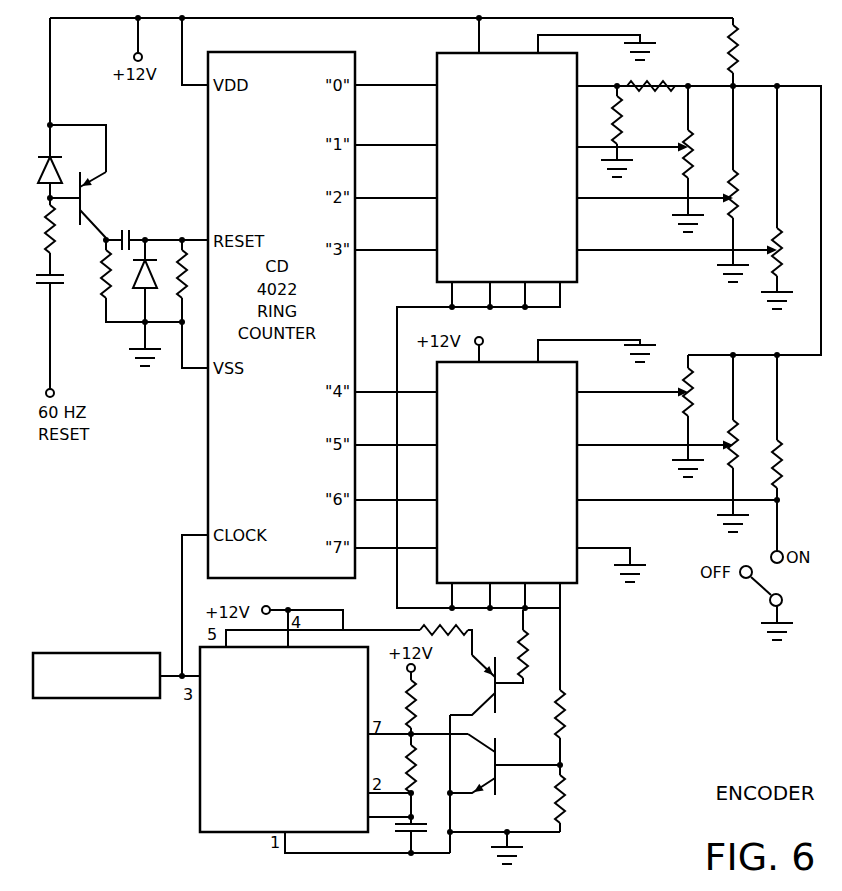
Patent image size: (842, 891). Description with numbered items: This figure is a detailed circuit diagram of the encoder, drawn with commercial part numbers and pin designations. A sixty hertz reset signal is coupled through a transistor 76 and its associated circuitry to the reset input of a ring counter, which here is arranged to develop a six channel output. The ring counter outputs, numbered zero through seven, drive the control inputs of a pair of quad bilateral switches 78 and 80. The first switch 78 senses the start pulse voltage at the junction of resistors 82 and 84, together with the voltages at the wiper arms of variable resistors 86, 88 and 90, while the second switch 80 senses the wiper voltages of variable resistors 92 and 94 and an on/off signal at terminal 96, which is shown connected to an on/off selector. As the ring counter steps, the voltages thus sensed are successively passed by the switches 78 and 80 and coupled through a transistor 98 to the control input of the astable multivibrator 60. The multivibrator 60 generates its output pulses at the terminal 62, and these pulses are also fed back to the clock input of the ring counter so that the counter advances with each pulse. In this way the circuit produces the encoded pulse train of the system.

The multivibrator 60 is at (200, 787).
The terminal 62 is at (100, 652).
The transistor 76 is at (90, 197).
The bilateral switch 78 is at (447, 52).
The bilateral switch 80 is at (510, 362).
The resistor 82 is at (668, 82).
The resistor 84 is at (628, 112).
The variable resistor 86 is at (680, 161).
The variable resistor 88 is at (738, 195).
The variable resistor 90 is at (781, 244).
The variable resistor 92 is at (682, 408).
The variable resistor 94 is at (741, 445).
The terminal 96 is at (780, 546).
The transistor 98 is at (508, 690).